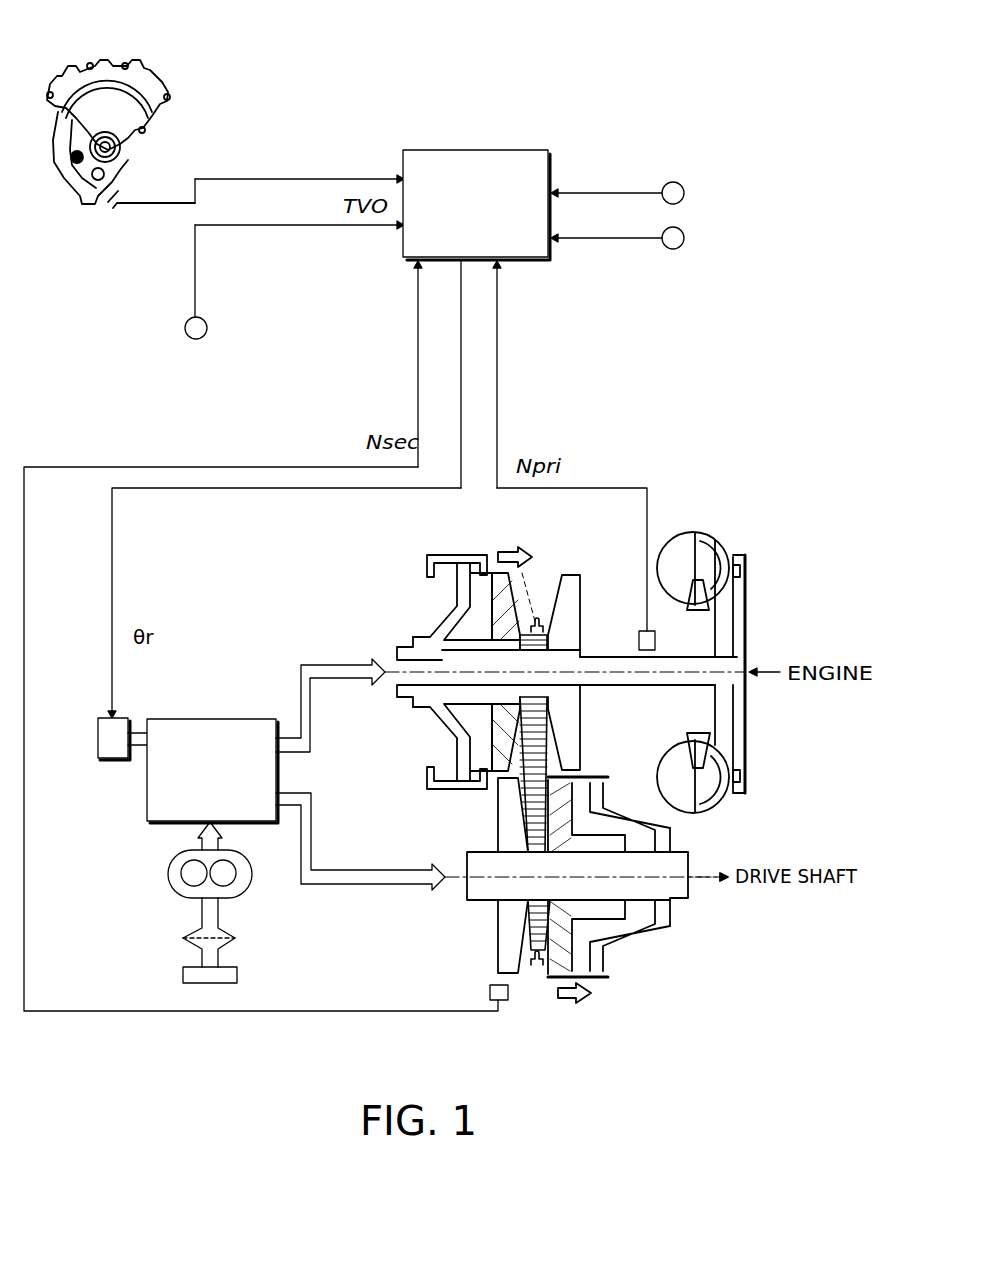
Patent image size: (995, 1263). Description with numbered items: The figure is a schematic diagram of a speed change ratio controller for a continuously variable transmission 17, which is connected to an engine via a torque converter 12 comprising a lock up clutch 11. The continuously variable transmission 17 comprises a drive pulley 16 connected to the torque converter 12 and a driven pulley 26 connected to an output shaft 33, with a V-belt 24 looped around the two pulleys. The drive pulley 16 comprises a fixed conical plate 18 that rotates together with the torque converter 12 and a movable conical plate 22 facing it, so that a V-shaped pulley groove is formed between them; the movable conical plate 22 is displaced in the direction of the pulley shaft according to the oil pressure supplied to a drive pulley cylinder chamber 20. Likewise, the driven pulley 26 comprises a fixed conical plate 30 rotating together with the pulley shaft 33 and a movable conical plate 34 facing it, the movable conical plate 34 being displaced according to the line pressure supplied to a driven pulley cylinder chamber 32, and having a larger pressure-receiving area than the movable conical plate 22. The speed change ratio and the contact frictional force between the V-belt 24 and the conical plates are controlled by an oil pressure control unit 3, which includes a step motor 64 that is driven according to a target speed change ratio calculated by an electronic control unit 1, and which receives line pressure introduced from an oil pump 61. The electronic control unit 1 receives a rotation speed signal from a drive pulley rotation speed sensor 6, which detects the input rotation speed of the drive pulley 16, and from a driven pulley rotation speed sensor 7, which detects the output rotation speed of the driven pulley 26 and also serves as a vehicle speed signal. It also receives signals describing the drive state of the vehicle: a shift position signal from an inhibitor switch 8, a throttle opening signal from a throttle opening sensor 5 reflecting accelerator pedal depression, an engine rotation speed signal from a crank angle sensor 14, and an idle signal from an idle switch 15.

The electronic control unit 1 is at (428, 153).
The oil pressure control unit 3 is at (143, 808).
The throttle opening sensor 5 is at (185, 327).
The drive pulley rotation speed sensor 6 is at (639, 640).
The driven pulley rotation speed sensor 7 is at (509, 991).
The inhibitor switch 8 is at (66, 65).
The lock up clutch 11 is at (743, 760).
The torque converter 12 is at (705, 530).
The crank angle sensor 14 is at (689, 183).
The idle switch 15 is at (689, 233).
The drive pulley 16 is at (575, 562).
The continuously variable transmission 17 is at (597, 905).
The fixed conical plate 18 is at (560, 580).
The drive pulley cylinder chamber 20 is at (470, 606).
The movable conical plate 22 is at (452, 727).
The V-belt 24 is at (557, 753).
The driven pulley 26 is at (561, 647).
The fixed conical plate 30 is at (520, 968).
The driven pulley cylinder chamber 32 is at (633, 913).
The output shaft 33 is at (688, 891).
The movable conical plate 34 is at (573, 811).
The oil pump 61 is at (248, 890).
The step motor 64 is at (96, 716).